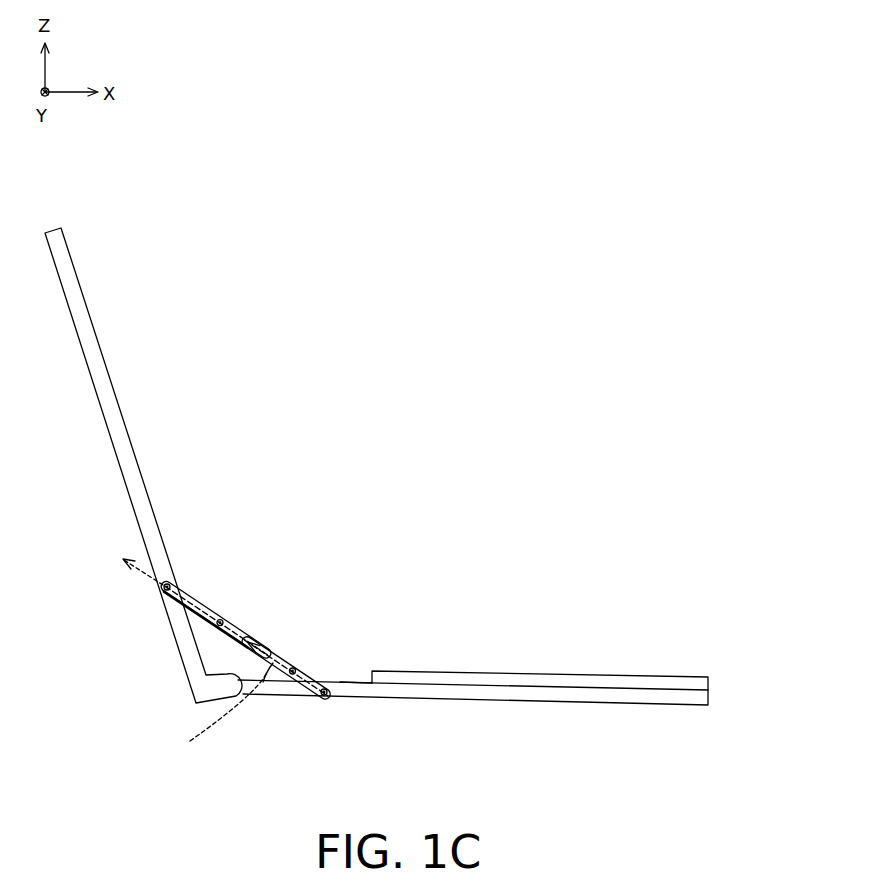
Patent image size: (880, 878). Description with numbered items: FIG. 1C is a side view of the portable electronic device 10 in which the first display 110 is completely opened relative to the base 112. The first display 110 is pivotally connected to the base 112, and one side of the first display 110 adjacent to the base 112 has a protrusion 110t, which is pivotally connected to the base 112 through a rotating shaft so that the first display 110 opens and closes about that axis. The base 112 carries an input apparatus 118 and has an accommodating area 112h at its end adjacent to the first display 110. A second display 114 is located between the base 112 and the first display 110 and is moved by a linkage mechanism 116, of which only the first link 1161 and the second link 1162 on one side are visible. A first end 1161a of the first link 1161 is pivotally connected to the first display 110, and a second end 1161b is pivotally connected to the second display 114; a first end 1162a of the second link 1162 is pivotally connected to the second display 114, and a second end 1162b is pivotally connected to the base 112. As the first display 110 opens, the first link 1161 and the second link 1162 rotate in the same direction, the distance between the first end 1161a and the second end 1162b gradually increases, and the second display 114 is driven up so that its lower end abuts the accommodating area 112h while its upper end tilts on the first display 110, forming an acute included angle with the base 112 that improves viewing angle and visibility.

The portable electronic device 10 is at (762, 151).
The first display 110 is at (95, 263).
The protrusion 110t is at (222, 685).
The base 112 is at (697, 694).
The accommodating area 112h is at (358, 686).
The second display 114 is at (268, 662).
The linkage mechanism 116 is at (688, 428).
The first link 1161 is at (190, 605).
The first end of the first link 1161a is at (172, 585).
The second end of the first link 1161b is at (223, 620).
The second link 1162 is at (303, 678).
The first end of the second link 1162a is at (295, 667).
The second end of the second link 1162b is at (327, 690).
The input apparatus 118 is at (693, 684).